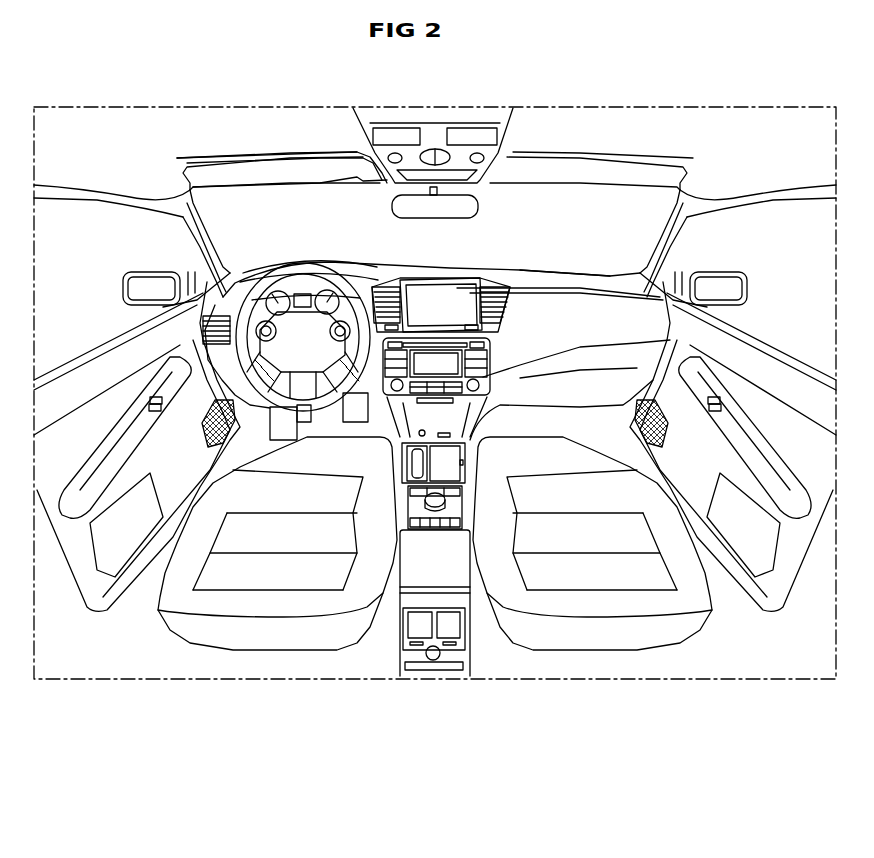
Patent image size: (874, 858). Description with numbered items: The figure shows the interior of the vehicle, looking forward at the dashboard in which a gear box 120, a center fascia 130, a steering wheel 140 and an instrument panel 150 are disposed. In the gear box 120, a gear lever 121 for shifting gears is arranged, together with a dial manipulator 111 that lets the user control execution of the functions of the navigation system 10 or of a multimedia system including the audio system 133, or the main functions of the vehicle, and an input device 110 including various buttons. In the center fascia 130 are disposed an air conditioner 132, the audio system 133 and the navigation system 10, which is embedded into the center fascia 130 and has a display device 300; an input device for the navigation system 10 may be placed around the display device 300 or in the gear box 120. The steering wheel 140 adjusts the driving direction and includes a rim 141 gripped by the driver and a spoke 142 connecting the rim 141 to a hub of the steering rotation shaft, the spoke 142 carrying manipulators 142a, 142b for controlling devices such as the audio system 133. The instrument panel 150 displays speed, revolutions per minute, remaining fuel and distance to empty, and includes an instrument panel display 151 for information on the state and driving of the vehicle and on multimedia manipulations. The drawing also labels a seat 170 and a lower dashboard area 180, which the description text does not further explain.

The navigation system 10 is at (471, 277).
The input device 110 is at (433, 507).
The dial manipulator 111 is at (425, 500).
The gear box 120 is at (441, 463).
The gear lever 121 is at (410, 455).
The center fascia 130 is at (522, 265).
The air conditioner 132 is at (510, 300).
The audio system 133 is at (497, 350).
The steering wheel 140 is at (310, 254).
The rim 141 is at (278, 270).
The spoke 142 is at (246, 317).
The manipulator 142a is at (237, 290).
The manipulator 142b is at (378, 295).
The instrument panel 150 is at (302, 288).
The instrument panel display 151 is at (330, 290).
The seat 170 is at (280, 635).
The lower dashboard panel 180 is at (284, 430).
The display device 300 is at (437, 292).